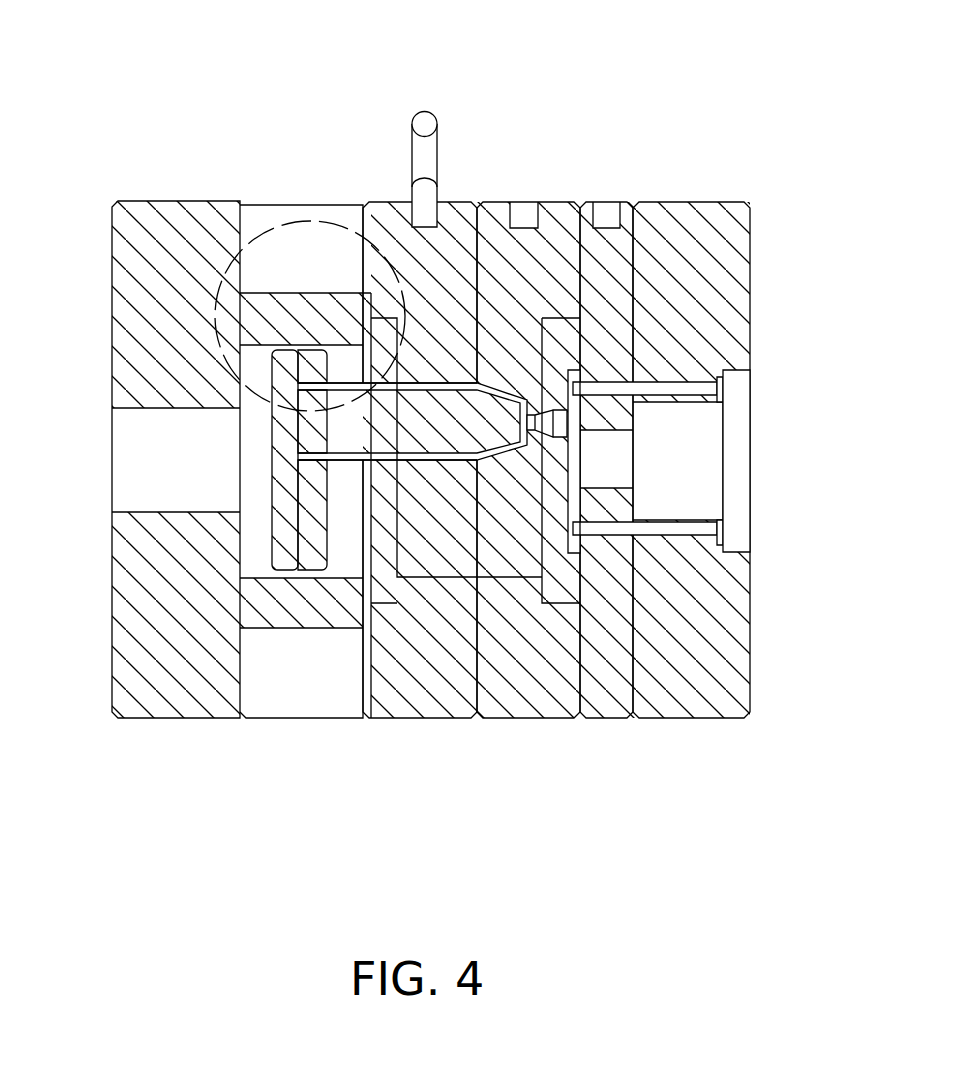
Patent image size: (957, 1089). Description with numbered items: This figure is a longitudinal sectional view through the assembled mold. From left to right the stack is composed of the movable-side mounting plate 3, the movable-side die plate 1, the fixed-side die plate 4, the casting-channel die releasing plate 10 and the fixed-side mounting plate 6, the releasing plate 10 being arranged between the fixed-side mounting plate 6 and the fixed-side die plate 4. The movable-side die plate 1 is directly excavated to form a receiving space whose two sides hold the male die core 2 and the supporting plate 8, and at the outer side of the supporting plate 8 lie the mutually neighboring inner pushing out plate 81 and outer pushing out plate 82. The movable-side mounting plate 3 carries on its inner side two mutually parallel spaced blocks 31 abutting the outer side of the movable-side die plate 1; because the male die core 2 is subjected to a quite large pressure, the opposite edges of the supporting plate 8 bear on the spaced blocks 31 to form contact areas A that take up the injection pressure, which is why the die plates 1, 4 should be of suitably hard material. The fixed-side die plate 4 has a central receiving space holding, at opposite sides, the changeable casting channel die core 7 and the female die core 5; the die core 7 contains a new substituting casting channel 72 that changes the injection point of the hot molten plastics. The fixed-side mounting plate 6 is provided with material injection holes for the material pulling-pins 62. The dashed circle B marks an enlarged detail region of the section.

The movable-side die plate 1 is at (413, 730).
The male die core 2 is at (432, 355).
The movable-side mounting plate 3 is at (112, 234).
The fixed-side die plate 4 is at (524, 728).
The female die core 5 is at (505, 360).
The fixed-side mounting plate 6 is at (665, 205).
The changeable casting channel die core 7 is at (565, 417).
The supporting plate 8 is at (380, 325).
The casting-channel die releasing plate 10 is at (607, 728).
The spaced blocks 31 is at (297, 612).
The material pulling-pins 62 is at (685, 535).
The new substituting casting channel 72 is at (572, 398).
The inner pushing out plate 81 is at (312, 527).
The outer pushing out plate 82 is at (282, 472).
The contact areas A is at (375, 322).
The detail B is at (272, 225).